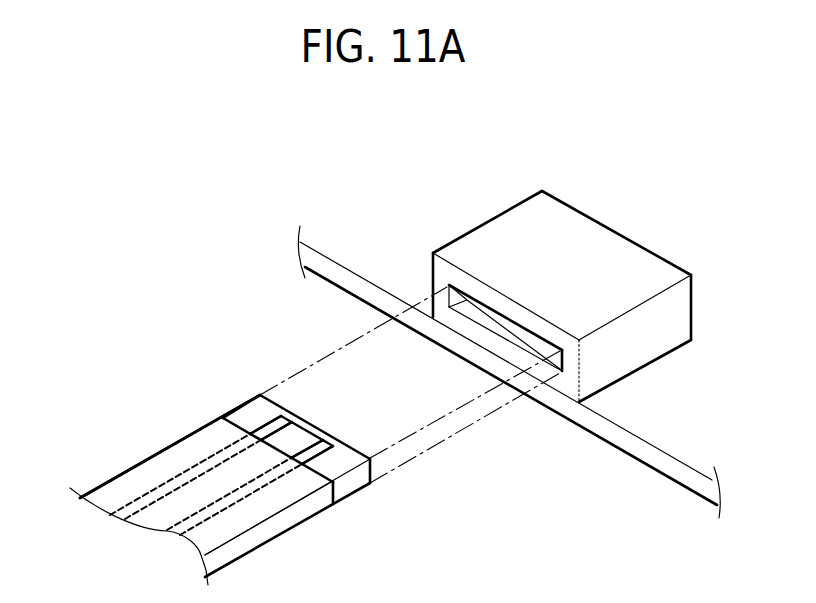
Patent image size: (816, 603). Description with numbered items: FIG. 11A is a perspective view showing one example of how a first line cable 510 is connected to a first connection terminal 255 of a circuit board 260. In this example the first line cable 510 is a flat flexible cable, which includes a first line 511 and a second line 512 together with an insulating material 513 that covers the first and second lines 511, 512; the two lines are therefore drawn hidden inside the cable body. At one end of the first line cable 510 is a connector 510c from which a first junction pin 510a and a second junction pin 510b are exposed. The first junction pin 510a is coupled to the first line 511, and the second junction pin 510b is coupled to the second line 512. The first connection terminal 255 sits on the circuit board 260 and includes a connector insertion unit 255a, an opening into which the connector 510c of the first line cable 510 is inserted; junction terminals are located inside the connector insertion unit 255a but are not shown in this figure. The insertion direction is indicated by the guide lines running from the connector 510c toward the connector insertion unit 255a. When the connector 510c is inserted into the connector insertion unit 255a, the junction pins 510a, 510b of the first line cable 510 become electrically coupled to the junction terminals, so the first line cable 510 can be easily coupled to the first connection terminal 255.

The first connection terminal 255 is at (607, 255).
The connector insertion unit 255a is at (500, 323).
The circuit board 260 is at (666, 405).
The first line cable 510 is at (88, 419).
The first junction pin 510a is at (280, 425).
The second junction pin 510b is at (313, 452).
The connector 510c is at (247, 415).
The first line 511 is at (137, 513).
The second line 512 is at (203, 513).
The insulating material 513 is at (197, 447).